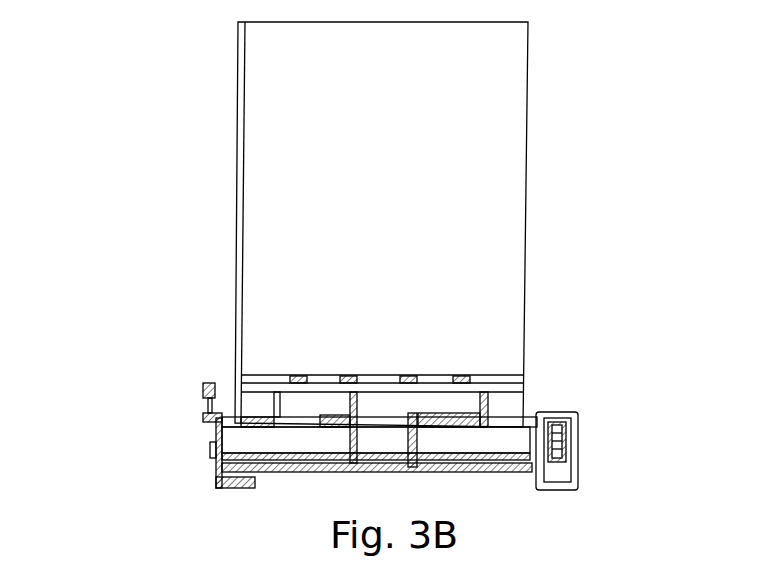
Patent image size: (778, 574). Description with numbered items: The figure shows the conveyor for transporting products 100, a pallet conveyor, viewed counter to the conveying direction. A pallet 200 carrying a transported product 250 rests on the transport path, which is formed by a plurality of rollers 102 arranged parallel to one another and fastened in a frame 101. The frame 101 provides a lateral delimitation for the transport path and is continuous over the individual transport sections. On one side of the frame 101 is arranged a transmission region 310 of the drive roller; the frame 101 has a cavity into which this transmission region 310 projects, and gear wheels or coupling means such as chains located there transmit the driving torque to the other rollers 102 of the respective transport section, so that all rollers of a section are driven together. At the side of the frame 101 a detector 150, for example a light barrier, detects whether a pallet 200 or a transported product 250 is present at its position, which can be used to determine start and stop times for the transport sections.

The conveyor for transporting products 100 is at (96, 78).
The transported product 250 is at (510, 108).
The pallet 200 is at (510, 398).
The roller 102 is at (282, 445).
The detector 150 is at (205, 385).
The frame 101 is at (568, 413).
The transmission region 310 is at (558, 462).